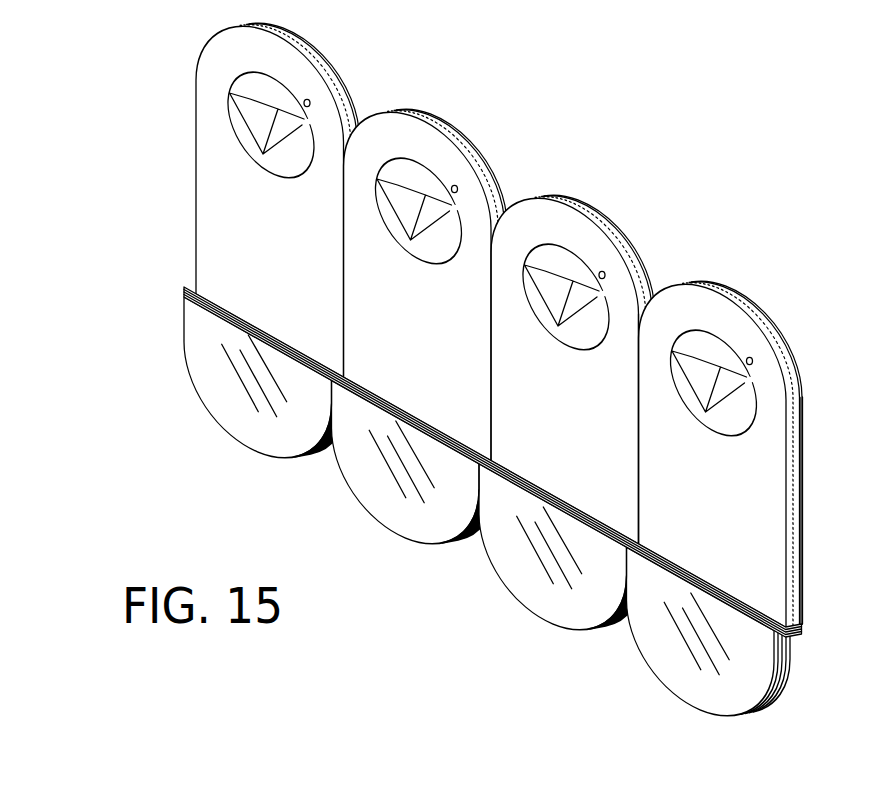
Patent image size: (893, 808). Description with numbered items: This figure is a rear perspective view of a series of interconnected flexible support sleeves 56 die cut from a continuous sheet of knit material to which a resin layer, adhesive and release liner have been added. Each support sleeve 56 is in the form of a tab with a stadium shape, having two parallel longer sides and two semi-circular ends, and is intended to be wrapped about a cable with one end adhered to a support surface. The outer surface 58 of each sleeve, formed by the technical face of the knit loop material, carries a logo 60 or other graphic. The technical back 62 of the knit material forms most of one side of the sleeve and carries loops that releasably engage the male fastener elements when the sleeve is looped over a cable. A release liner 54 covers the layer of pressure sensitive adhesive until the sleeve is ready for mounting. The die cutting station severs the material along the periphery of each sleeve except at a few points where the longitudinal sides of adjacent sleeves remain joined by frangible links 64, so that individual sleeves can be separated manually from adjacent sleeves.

The release liner 54 is at (362, 498).
The support sleeve 56 is at (707, 224).
The outer surface 58 is at (255, 248).
The logo 60 is at (422, 262).
The technical back 62 is at (443, 124).
The frangible links 64 is at (638, 478).